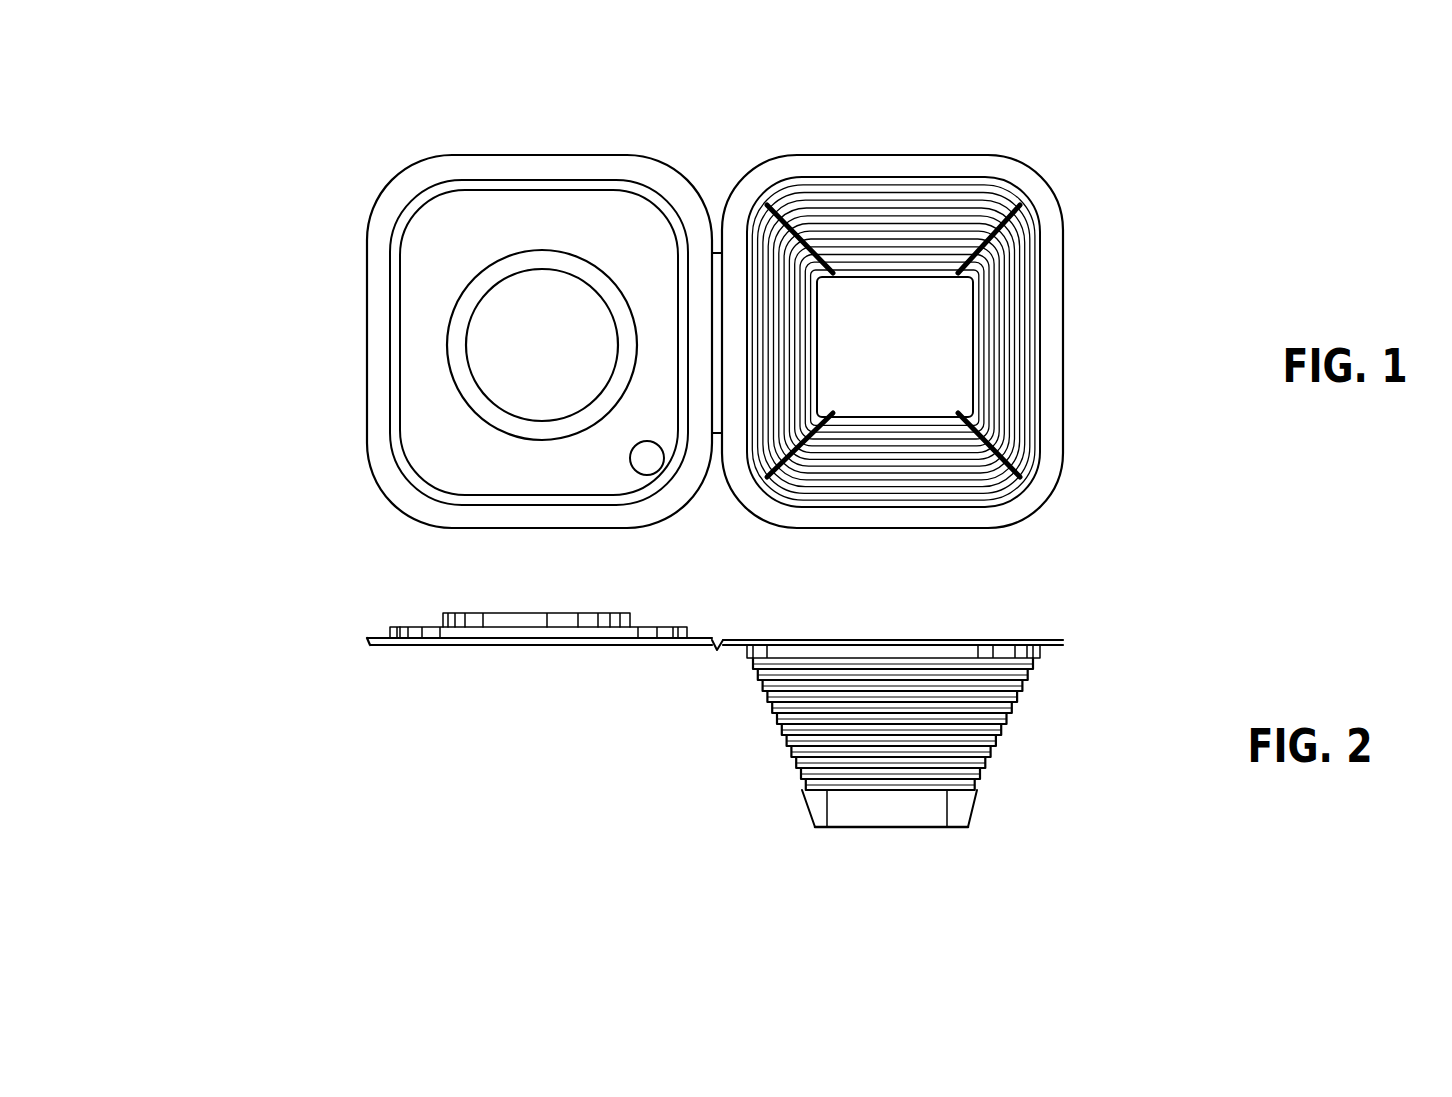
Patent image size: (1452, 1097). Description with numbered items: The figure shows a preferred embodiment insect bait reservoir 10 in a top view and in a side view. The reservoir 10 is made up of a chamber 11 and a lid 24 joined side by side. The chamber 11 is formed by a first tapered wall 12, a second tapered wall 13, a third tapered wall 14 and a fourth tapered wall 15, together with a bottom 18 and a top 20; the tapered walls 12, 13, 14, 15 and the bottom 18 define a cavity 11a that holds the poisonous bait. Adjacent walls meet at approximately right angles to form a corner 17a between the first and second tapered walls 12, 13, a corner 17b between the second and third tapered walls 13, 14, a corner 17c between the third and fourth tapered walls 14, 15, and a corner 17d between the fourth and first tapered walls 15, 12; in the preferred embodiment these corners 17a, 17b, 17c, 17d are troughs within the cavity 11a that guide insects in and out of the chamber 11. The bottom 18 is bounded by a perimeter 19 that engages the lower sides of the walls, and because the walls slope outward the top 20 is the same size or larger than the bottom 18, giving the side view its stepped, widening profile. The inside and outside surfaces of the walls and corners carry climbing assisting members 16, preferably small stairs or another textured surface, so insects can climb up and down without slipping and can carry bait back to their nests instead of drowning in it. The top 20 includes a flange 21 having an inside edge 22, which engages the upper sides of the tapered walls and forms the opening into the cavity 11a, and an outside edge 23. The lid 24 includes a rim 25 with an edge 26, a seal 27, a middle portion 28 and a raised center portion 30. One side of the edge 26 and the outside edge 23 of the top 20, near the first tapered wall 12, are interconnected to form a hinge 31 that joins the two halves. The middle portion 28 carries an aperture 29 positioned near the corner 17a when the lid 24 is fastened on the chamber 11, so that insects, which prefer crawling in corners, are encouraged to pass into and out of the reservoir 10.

In FIG. 1, the reservoir 10 is at (1053, 108).
In FIG. 2, the reservoir 10 is at (682, 832).
In FIG. 1, the chamber 11 is at (1078, 291).
In FIG. 2, the chamber 11 is at (1017, 807).
In FIG. 1, the cavity 11a is at (948, 360).
In FIG. 1, the first tapered wall 12 is at (760, 447).
In FIG. 1, the second tapered wall 13 is at (885, 480).
In FIG. 1, the third tapered wall 14 is at (1013, 410).
In FIG. 1, the fourth tapered wall 15 is at (960, 205).
In FIG. 1, the climbing assisting members 16 is at (1025, 268).
In FIG. 2, the climbing assisting members 16 is at (797, 775).
In FIG. 1, the corner 17a is at (770, 473).
In FIG. 2, the corner 17a is at (760, 705).
In FIG. 1, the corner 17b is at (1018, 480).
In FIG. 2, the corner 17b is at (1020, 690).
In FIG. 1, the corner 17c is at (1023, 207).
In FIG. 1, the corner 17d is at (778, 207).
In FIG. 1, the bottom 18 is at (881, 338).
In FIG. 2, the bottom 18 is at (845, 833).
In FIG. 1, the perimeter 19 is at (960, 383).
In FIG. 2, the perimeter 19 is at (932, 830).
In FIG. 1, the top 20 is at (812, 150).
In FIG. 2, the top 20 is at (812, 637).
In FIG. 1, the flange 21 is at (850, 165).
In FIG. 2, the flange 21 is at (903, 637).
In FIG. 1, the inside edge 22 is at (928, 178).
In FIG. 1, the outside edge 23 is at (884, 157).
In FIG. 1, the lid 24 is at (305, 205).
In FIG. 2, the lid 24 is at (520, 655).
In FIG. 1, the rim 25 is at (375, 295).
In FIG. 2, the rim 25 is at (367, 644).
In FIG. 1, the edge 26 is at (385, 357).
In FIG. 1, the seal 27 is at (400, 403).
In FIG. 2, the seal 27 is at (390, 630).
In FIG. 1, the middle portion 28 is at (417, 453).
In FIG. 2, the middle portion 28 is at (418, 630).
In FIG. 1, the aperture 29 is at (640, 460).
In FIG. 1, the center portion 30 is at (500, 292).
In FIG. 2, the center portion 30 is at (498, 613).
In FIG. 1, the hinge 31 is at (717, 220).